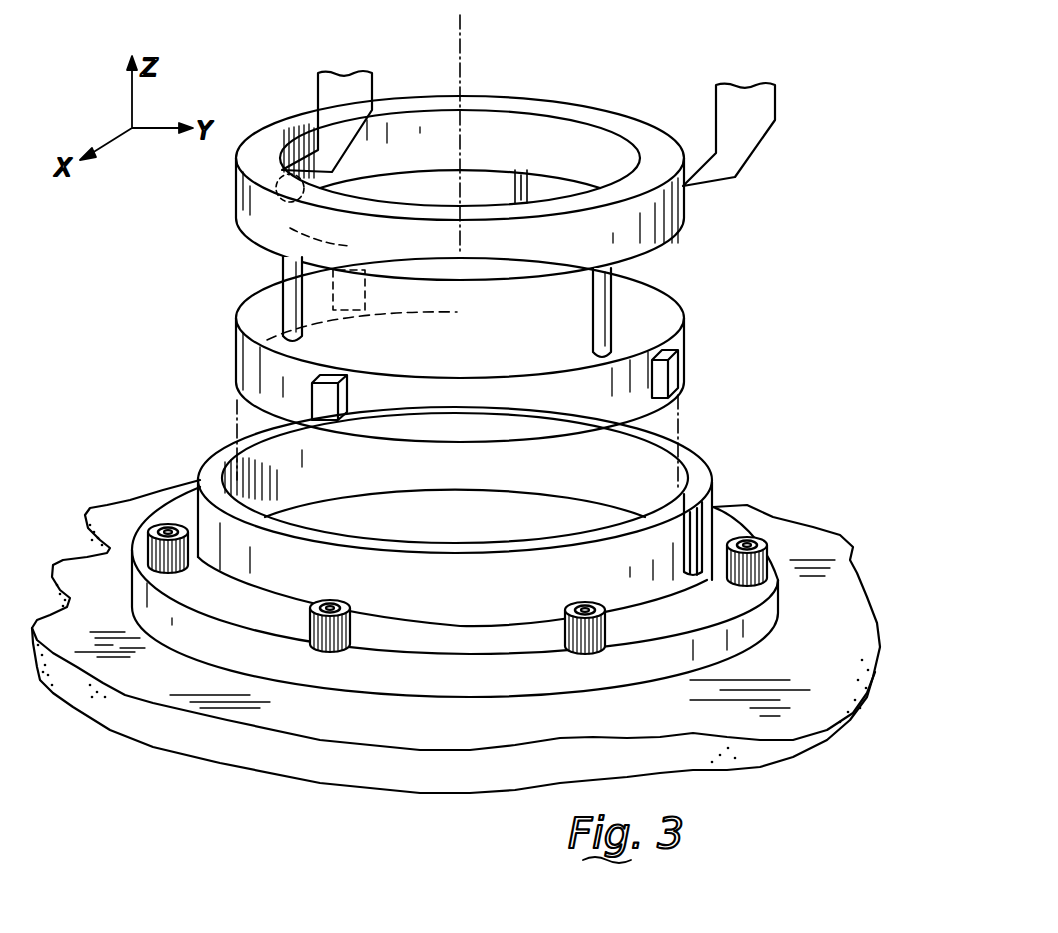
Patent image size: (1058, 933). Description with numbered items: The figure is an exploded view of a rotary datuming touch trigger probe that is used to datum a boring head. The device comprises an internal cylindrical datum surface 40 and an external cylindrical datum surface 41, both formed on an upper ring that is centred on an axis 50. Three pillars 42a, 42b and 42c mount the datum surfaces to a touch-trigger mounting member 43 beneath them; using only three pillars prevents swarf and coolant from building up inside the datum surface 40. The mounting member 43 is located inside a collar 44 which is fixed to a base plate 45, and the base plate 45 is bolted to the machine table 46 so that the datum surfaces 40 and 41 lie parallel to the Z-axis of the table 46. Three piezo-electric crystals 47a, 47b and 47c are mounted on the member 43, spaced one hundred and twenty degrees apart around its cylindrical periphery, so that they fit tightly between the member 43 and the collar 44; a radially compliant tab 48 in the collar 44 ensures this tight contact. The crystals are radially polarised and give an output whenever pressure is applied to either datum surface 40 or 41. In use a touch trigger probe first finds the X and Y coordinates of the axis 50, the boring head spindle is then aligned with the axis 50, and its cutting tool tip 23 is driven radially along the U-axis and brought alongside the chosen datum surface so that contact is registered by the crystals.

The cutting tool tip 23 is at (257, 226).
The internal cylindrical datum surface 40 is at (610, 160).
The external cylindrical datum surface 41 is at (660, 217).
The pillar 42a is at (612, 318).
The pillar 42b is at (286, 292).
The pillar 42c is at (523, 190).
The touch-trigger mounting member 43 is at (238, 343).
The collar 44 is at (695, 485).
The base plate 45 is at (766, 638).
The machine table 46 is at (117, 513).
The piezo-electric crystal 47a is at (668, 377).
The piezo-electric crystal 47b is at (322, 394).
The piezo-electric crystal 47c is at (388, 313).
The radially compliant tab 48 is at (680, 502).
The axis 50 is at (462, 33).